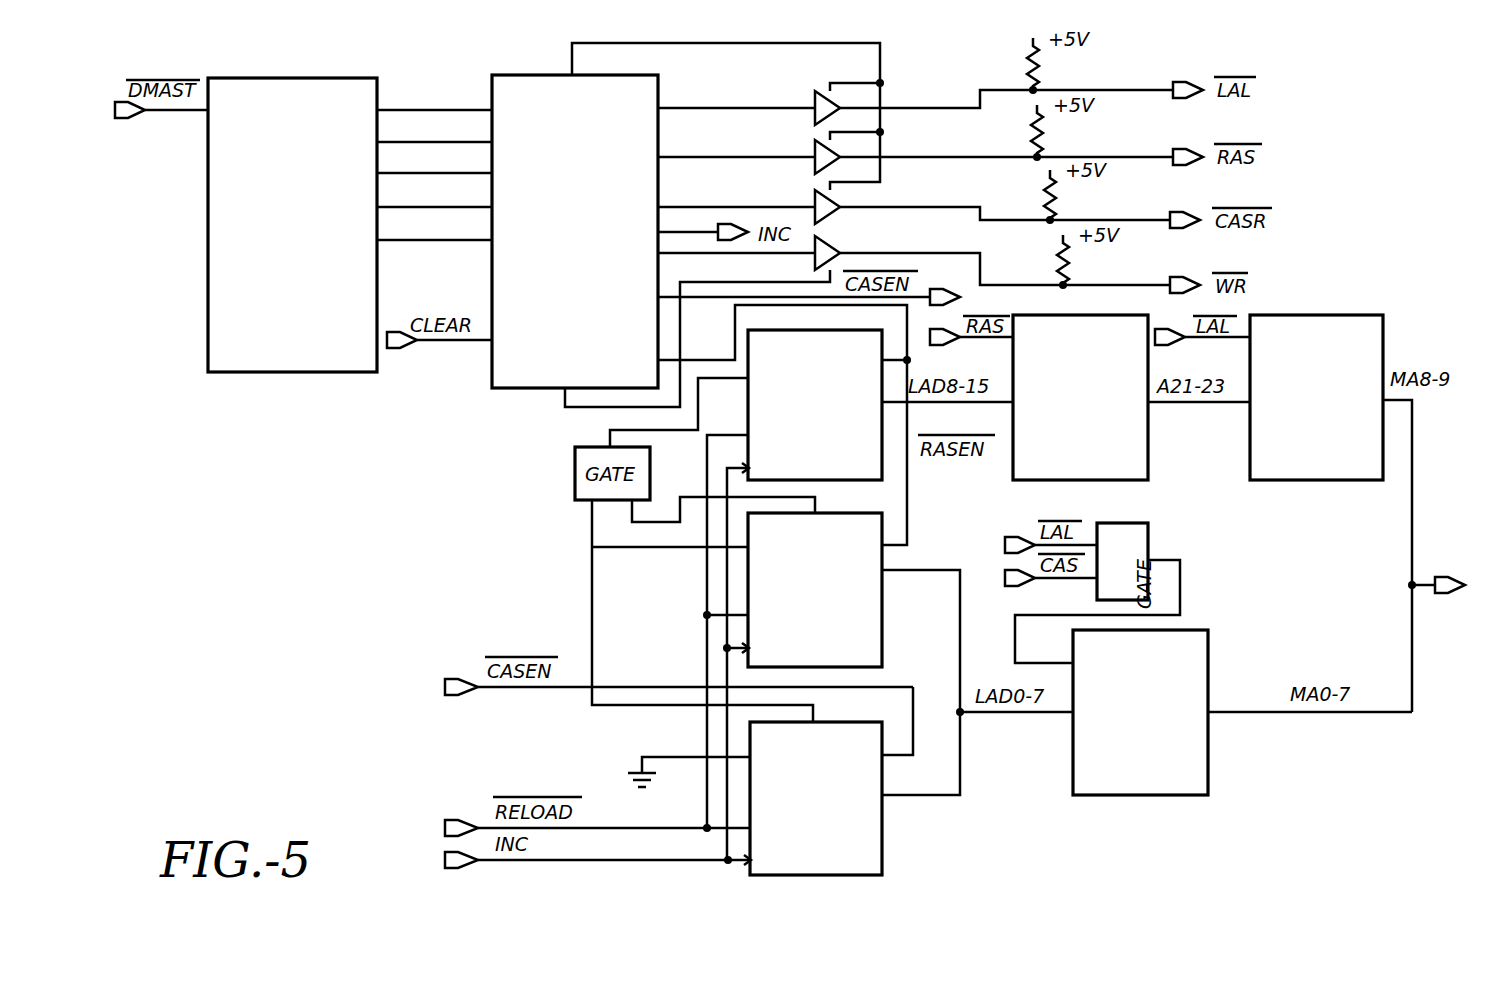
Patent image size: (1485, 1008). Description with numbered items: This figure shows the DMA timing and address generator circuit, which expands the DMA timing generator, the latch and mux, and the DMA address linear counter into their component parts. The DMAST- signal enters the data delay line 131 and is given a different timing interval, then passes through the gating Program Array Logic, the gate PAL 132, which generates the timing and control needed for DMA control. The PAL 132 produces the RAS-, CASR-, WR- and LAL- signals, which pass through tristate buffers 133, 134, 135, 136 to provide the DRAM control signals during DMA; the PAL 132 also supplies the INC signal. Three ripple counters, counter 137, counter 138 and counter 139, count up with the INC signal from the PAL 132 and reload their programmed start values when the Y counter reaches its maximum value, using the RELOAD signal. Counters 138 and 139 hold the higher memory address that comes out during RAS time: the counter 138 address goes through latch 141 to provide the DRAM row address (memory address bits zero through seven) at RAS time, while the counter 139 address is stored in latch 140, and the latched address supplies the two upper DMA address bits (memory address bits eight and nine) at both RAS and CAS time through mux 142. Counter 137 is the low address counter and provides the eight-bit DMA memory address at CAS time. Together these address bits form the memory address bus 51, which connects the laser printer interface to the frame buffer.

The data delay line 131 is at (352, 76).
The gate PAL 132 is at (530, 388).
The tristate buffer 133 is at (814, 101).
The tristate buffer 134 is at (814, 151).
The tristate buffer 135 is at (814, 201).
The tristate buffer 136 is at (826, 245).
The counter 137 is at (884, 820).
The counter 138 is at (884, 600).
The counter 139 is at (820, 480).
The latch 140 is at (1148, 458).
The latch 141 is at (1208, 755).
The mux 142 is at (1317, 480).
The bus 51 is at (1423, 587).